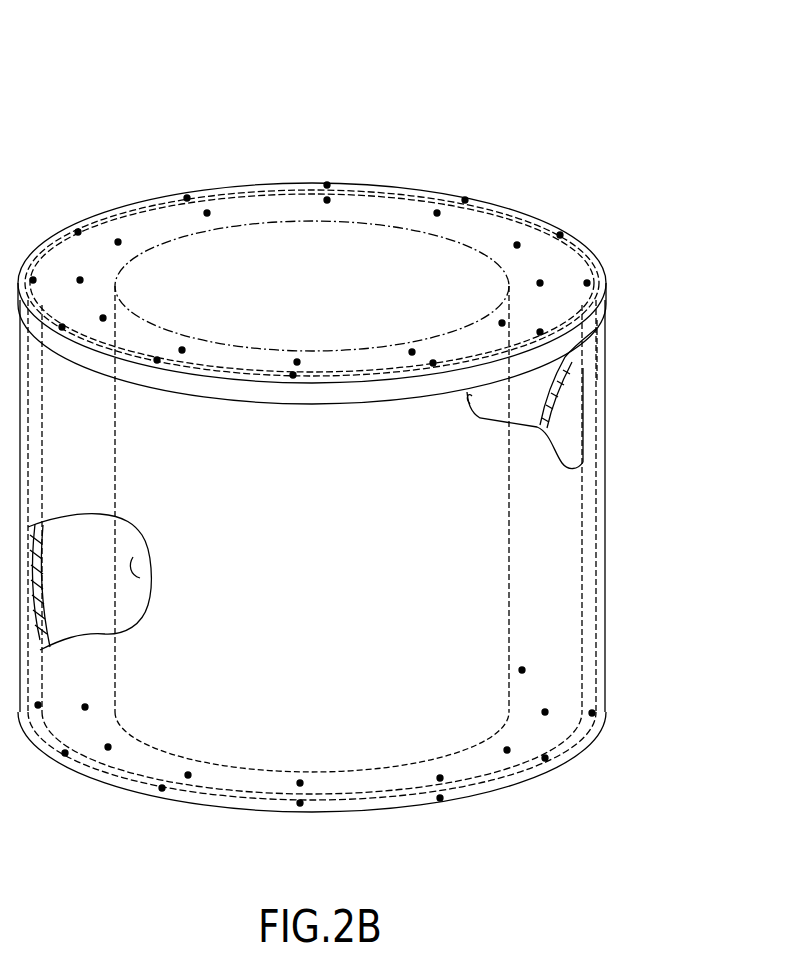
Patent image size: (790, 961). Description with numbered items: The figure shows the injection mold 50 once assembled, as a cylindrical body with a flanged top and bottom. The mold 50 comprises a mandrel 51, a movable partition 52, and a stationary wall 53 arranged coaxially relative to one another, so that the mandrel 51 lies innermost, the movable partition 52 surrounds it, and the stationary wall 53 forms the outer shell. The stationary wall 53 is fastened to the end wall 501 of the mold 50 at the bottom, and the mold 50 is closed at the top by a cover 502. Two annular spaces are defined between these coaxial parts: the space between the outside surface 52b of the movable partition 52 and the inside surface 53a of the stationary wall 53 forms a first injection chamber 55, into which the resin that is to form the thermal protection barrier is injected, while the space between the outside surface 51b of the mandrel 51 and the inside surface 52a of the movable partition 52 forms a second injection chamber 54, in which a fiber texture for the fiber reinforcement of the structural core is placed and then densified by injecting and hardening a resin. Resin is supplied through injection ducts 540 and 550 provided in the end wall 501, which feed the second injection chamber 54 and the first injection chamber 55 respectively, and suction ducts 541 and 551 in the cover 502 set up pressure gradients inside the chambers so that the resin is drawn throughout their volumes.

The injection mold 50 is at (153, 80).
The end wall 501 is at (128, 789).
The cover 502 is at (490, 238).
The mandrel 51 is at (525, 409).
The outside surface of the mandrel 51b is at (133, 557).
The movable partition 52 is at (587, 447).
The inside surface of the movable partition 52a is at (89, 565).
The outside surface of the movable partition 52b is at (564, 398).
The stationary wall 53 is at (607, 515).
The inside surface of the stationary wall 53a is at (588, 417).
The second injection chamber 54 is at (97, 592).
The first injection chamber 55 is at (600, 350).
The injection duct 540 is at (188, 772).
The suction duct 541 is at (206, 211).
The injection duct 550 is at (440, 805).
The suction duct 551 is at (465, 199).